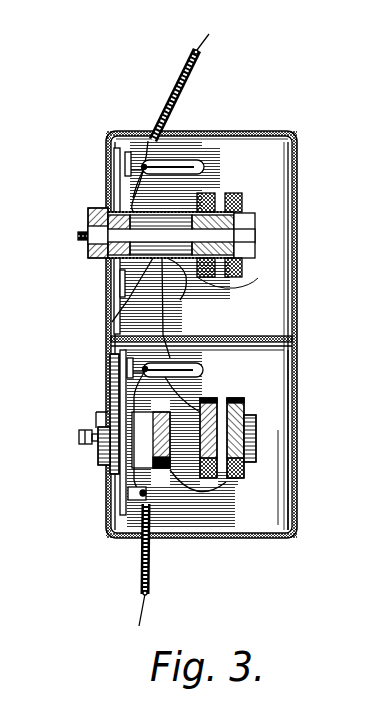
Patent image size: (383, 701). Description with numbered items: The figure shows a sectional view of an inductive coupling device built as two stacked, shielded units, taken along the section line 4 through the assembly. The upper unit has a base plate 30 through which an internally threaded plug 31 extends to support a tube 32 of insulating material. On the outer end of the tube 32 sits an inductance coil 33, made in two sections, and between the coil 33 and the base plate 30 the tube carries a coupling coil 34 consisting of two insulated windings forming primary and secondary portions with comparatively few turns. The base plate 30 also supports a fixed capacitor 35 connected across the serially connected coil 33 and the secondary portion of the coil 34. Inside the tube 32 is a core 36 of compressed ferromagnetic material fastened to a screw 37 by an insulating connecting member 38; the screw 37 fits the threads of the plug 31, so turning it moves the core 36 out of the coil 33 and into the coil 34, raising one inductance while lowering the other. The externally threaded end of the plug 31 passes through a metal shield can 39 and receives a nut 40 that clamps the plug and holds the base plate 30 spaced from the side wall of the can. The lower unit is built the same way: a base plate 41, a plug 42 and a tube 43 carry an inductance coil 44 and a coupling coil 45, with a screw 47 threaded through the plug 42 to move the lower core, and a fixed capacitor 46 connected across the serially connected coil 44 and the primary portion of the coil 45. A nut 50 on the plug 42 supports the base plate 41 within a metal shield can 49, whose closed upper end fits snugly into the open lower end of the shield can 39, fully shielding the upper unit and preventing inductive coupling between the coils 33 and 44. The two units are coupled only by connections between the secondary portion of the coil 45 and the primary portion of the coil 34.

The section line 4— 4 is at (292, 75).
The base plate 30 is at (117, 286).
The internally threaded plug 31 is at (112, 272).
The tube of insulating material 32 is at (256, 257).
The inductance coil 33 is at (233, 193).
The coupling coil 34 is at (115, 320).
The fixed capacitor 35 is at (188, 160).
The core 36 is at (250, 226).
The screw 37 is at (80, 235).
The connecting member 38 is at (176, 268).
The metal shield can 39 is at (290, 137).
The nut 40 is at (98, 206).
The base plate 41 is at (124, 390).
The plug 42 is at (112, 404).
The tube 43 is at (250, 430).
The inductance coil 44 is at (210, 398).
The coupling coil 45 is at (165, 470).
The fixed capacitor 46 is at (196, 369).
The screw 47 is at (84, 440).
The metal shield can 49 is at (291, 468).
The nut 50 is at (100, 463).